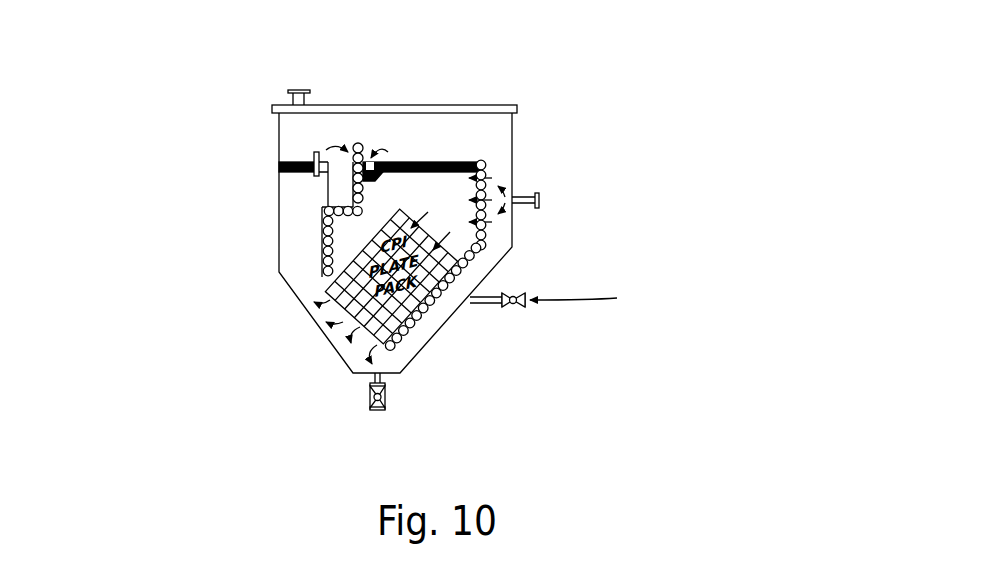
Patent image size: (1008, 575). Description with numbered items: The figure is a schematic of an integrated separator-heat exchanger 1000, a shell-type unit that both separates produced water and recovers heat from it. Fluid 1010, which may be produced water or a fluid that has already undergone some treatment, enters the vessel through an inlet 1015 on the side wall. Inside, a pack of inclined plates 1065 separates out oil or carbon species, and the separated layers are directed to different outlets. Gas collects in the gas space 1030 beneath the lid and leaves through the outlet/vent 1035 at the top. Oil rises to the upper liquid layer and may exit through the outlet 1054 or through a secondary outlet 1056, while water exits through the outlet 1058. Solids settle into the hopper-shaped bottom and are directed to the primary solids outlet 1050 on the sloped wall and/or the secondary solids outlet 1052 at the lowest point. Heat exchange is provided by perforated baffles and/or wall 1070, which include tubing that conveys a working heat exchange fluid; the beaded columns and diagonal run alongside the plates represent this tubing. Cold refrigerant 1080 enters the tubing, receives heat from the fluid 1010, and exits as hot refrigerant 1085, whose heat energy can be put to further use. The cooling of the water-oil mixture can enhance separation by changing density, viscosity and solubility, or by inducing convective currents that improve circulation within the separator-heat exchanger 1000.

The integrated separator-heat exchanger 1000 is at (557, 54).
The fluid 1010 is at (545, 200).
The inlet 1015 is at (522, 192).
The gas space 1030 is at (452, 137).
The outlet/vent 1035 is at (298, 86).
The primary solids outlet 1050 is at (516, 290).
The secondary solids outlet 1052 is at (377, 415).
The outlet 1054 is at (371, 160).
The secondary outlet 1056 is at (291, 157).
The outlet 1058 is at (335, 186).
The inclined plates 1065 is at (409, 315).
The perforated baffles and/or wall 1070 is at (317, 248).
The cold refrigerant 1080 is at (360, 142).
The hot refrigerant 1085 is at (312, 281).